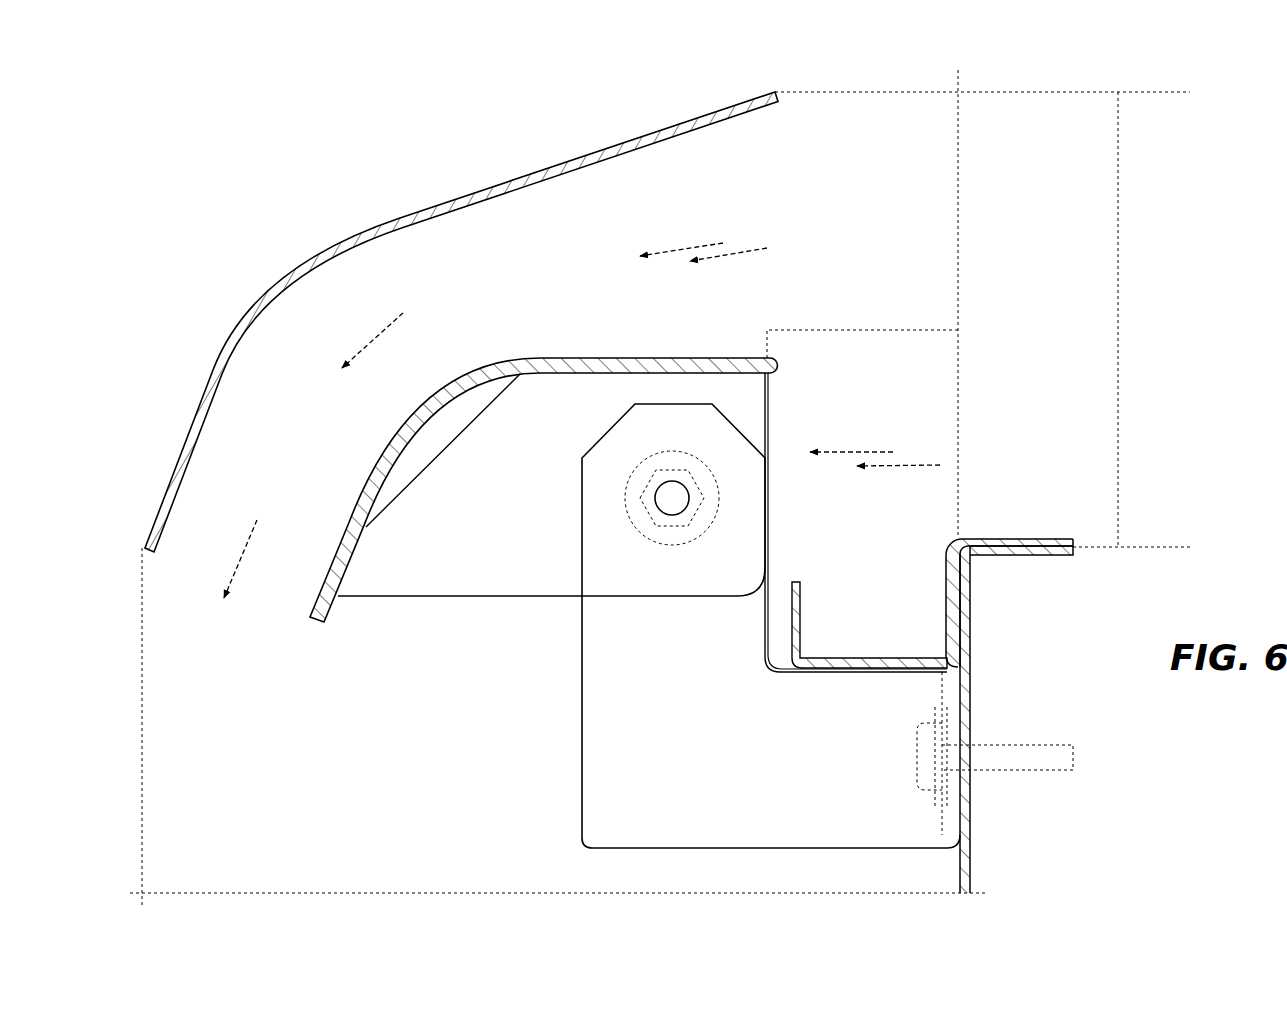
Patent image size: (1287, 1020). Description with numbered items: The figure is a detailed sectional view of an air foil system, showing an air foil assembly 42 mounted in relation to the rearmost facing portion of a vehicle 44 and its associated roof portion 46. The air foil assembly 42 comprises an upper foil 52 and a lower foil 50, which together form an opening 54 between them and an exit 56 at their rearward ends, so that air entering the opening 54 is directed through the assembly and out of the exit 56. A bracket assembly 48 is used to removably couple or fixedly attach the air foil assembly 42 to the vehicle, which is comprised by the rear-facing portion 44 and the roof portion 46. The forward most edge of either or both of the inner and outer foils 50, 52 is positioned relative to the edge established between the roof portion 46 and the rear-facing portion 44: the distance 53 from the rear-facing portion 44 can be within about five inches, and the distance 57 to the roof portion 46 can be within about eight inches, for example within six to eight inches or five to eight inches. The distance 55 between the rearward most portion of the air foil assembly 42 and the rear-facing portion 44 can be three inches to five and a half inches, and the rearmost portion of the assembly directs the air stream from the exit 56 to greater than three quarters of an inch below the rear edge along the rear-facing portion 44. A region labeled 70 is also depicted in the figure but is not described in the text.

The air foil assembly 42 is at (389, 192).
The upper foil 52 is at (660, 123).
The opening 54 is at (752, 188).
The distance 53 is at (903, 328).
The distance 57 is at (1120, 303).
The lower foil 50 is at (635, 357).
The gap 70 is at (868, 575).
The bracket assembly 48 is at (542, 765).
The roof portion 46 is at (1082, 543).
The rear-facing portion 44 is at (960, 870).
The exit 56 is at (260, 610).
The distance 55 is at (263, 890).